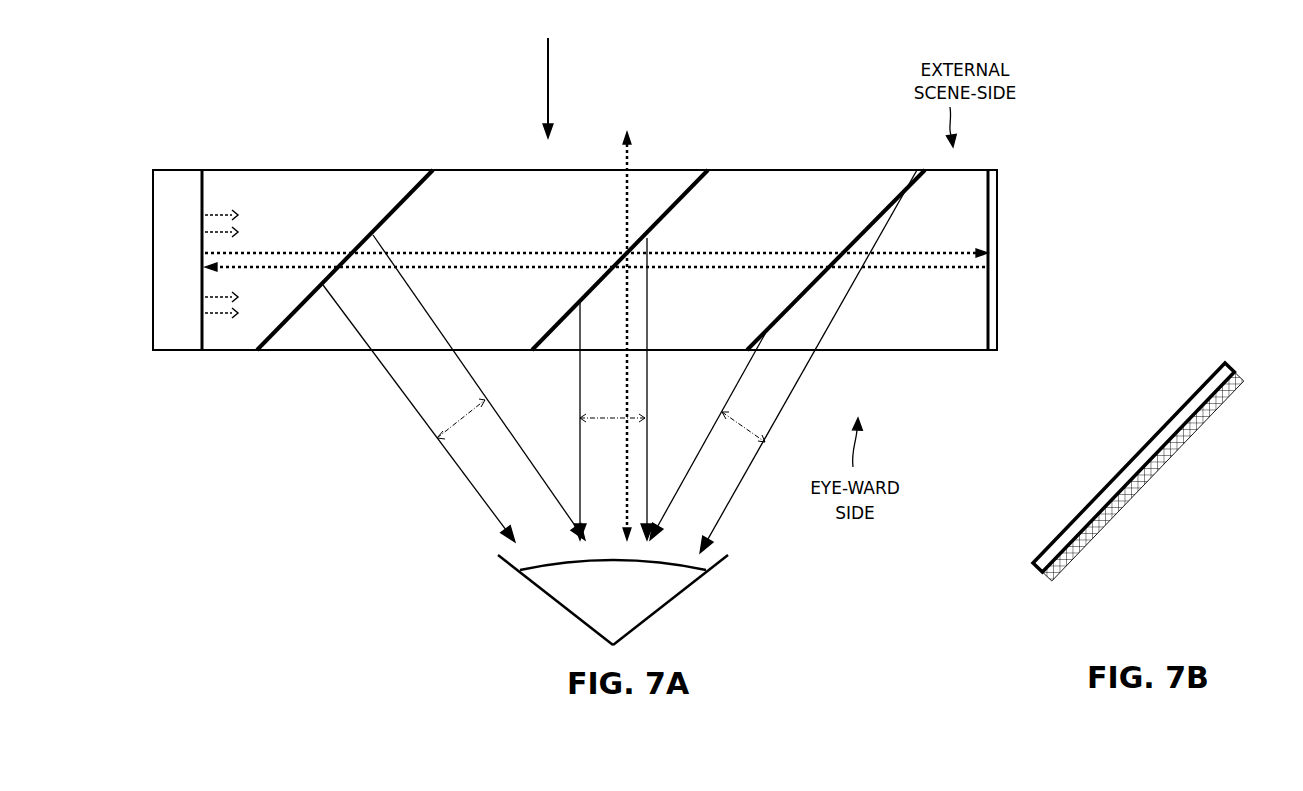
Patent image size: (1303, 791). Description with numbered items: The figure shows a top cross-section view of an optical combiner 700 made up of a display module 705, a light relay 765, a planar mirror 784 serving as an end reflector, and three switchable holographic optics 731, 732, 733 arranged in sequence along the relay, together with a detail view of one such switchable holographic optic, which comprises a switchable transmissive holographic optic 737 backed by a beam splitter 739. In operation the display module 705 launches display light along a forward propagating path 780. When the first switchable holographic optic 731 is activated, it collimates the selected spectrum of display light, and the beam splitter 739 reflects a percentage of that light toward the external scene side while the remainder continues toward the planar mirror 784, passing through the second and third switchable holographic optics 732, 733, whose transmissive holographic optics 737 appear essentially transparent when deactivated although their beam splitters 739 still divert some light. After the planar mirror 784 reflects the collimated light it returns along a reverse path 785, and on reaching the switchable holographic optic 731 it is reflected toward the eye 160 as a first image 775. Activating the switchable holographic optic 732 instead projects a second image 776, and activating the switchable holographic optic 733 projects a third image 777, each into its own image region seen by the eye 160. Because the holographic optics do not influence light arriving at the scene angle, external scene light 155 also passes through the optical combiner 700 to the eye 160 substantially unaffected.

In FIG. 7A, the optical combiner 700 is at (1054, 66).
In FIG. 7A, the display module 705 is at (170, 170).
In FIG. 7A, the light relay 765 is at (227, 351).
In FIG. 7A, the switchable holographic optic 731 is at (410, 193).
In FIG. 7B, the switchable holographic optic 731 is at (1092, 513).
In FIG. 7A, the switchable holographic optic 732 is at (683, 195).
In FIG. 7B, the switchable holographic optic 732 is at (1092, 513).
In FIG. 7A, the switchable holographic optic 733 is at (904, 190).
In FIG. 7B, the switchable holographic optic 733 is at (1092, 513).
In FIG. 7A, the planar mirror 784 is at (1000, 188).
In FIG. 7A, the forward propagating path 780 is at (760, 252).
In FIG. 7A, the reverse path 785 is at (970, 267).
In FIG. 7A, the external scene light 155 is at (548, 72).
In FIG. 7A, the image 775 is at (480, 401).
In FIG. 7A, the image 776 is at (623, 412).
In FIG. 7A, the image 777 is at (737, 423).
In FIG. 7A, the eye 160 is at (600, 617).
In FIG. 7B, the switchable transmissive holographic optic 737 is at (1040, 562).
In FIG. 7B, the beam splitter 739 is at (1055, 580).